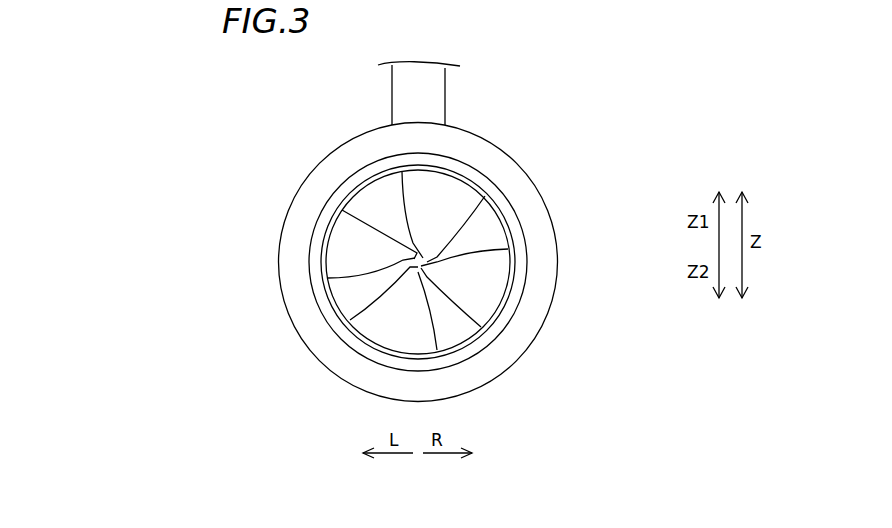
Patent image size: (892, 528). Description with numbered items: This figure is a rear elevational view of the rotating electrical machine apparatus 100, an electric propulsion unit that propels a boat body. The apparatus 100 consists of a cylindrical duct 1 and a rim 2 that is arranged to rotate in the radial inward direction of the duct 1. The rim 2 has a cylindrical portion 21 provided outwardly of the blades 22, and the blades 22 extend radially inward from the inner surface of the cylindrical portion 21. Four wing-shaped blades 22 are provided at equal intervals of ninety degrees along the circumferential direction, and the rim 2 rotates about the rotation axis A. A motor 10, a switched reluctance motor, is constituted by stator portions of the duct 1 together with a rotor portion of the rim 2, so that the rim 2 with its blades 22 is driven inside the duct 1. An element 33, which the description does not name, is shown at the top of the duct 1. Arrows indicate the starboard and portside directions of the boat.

The rotating electrical machine apparatus 100 is at (553, 93).
The duct 1 is at (487, 146).
The discharge pipe 33 is at (445, 101).
The rim 2 is at (515, 288).
The cylindrical portion 21 is at (481, 328).
The blades 22 is at (459, 195).
The motor 10 is at (568, 216).
The rotation axis A is at (503, 205).